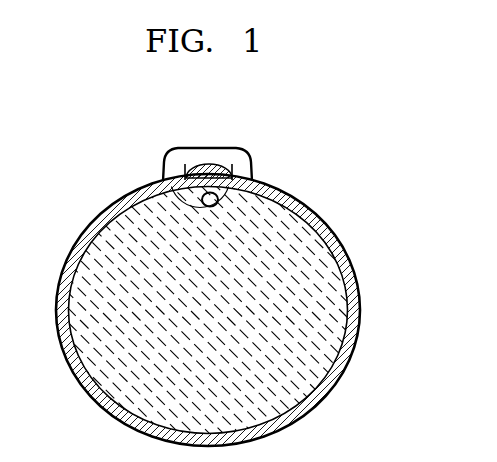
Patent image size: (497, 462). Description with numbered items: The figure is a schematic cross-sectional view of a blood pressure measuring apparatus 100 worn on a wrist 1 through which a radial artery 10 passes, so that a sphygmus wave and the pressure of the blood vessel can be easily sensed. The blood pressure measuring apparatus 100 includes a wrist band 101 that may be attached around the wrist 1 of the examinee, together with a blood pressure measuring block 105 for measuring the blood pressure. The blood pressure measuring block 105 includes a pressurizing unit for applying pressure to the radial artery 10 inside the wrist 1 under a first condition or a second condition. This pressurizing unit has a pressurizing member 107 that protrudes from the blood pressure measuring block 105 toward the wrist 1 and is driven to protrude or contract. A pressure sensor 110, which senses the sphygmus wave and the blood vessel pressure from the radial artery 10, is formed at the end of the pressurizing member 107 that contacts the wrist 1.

The blood pressure measuring apparatus 100 is at (311, 158).
The wrist 1 is at (320, 240).
The radial artery 10 is at (160, 185).
The wrist band 101 is at (85, 222).
The blood pressure measuring block 105 is at (177, 157).
The pressurizing member 107 is at (212, 170).
The pressure sensor 110 is at (237, 172).